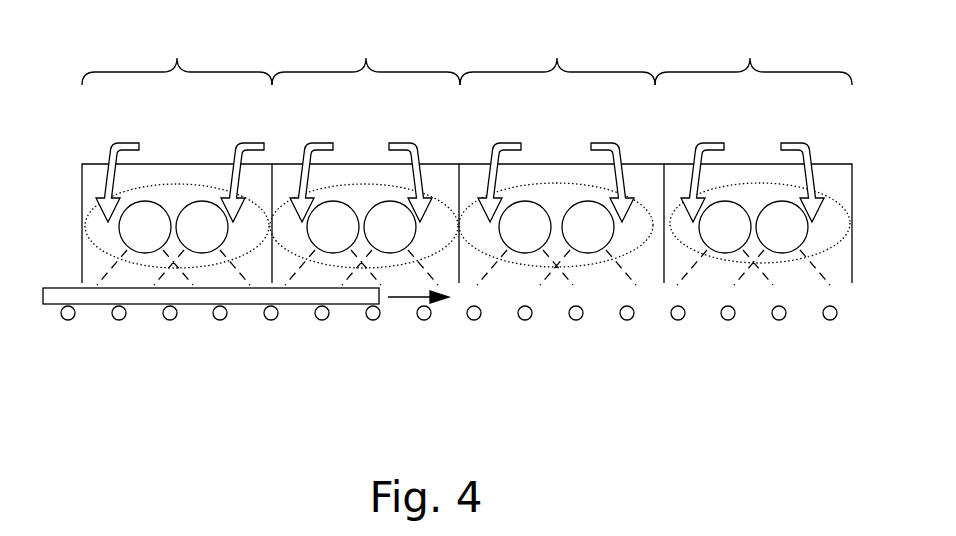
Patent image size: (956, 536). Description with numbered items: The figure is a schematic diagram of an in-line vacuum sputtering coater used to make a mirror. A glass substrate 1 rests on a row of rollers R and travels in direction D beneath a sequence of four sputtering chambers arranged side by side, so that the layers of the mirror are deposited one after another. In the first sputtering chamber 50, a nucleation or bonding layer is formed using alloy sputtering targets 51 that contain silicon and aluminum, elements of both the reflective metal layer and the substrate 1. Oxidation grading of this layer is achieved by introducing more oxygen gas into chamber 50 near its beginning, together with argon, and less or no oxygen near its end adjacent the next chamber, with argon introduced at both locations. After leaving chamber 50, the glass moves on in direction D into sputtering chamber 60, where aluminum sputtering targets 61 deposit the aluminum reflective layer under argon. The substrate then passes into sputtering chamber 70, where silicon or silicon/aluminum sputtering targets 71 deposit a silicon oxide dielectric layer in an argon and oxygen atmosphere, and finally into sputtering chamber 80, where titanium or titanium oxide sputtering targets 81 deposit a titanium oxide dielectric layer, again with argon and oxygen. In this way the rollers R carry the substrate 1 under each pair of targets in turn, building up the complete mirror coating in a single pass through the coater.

The sputtering chamber 50 is at (172, 153).
The sputtering chamber 60 is at (365, 153).
The sputtering chamber 70 is at (561, 153).
The sputtering chamber 80 is at (753, 153).
The alloy sputtering target 51 is at (118, 239).
The Al sputtering target 61 is at (332, 253).
The Si or Si/Al sputtering target 71 is at (525, 253).
The Ti or TiOx sputtering target 81 is at (726, 250).
The glass substrate 1 is at (185, 304).
The rollers R is at (118, 321).
The direction D is at (400, 299).